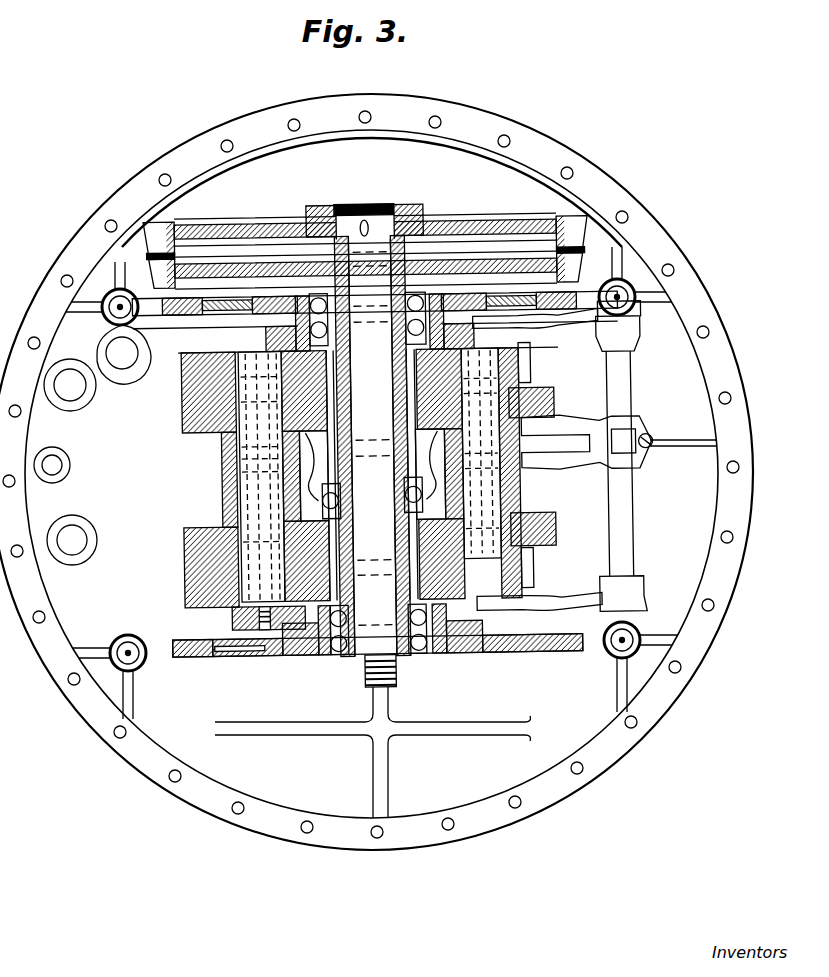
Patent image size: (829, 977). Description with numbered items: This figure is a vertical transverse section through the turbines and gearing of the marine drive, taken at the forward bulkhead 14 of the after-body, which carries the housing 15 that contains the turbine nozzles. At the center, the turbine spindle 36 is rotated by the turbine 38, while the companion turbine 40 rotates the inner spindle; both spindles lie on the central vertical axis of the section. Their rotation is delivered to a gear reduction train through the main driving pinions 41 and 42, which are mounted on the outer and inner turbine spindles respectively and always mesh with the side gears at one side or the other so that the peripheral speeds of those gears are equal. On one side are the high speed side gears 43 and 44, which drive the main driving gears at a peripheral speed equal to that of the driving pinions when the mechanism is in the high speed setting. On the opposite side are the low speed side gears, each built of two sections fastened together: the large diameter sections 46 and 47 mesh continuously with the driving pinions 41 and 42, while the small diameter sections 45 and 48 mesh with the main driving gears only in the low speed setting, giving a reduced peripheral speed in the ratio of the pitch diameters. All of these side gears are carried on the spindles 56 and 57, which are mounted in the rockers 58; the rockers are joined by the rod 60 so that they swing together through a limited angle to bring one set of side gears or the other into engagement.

The forward bulkhead 14 is at (598, 758).
The housing 15 is at (512, 172).
The turbine spindle 36 is at (372, 212).
The turbine 38 is at (230, 240).
The turbine 40 is at (240, 268).
The main driving pinion 41 is at (408, 365).
The main driving pinion 42 is at (372, 448).
The side gear 43 is at (190, 415).
The side gear 44 is at (190, 536).
The low speed side gear section 45 is at (533, 362).
The low speed side gear section 46 is at (556, 406).
The low speed side gear section 47 is at (556, 522).
The low speed side gear section 48 is at (530, 565).
The spindle 56 is at (287, 448).
The spindle 57 is at (483, 444).
The rocker 58 is at (560, 338).
The rod 60 is at (622, 513).